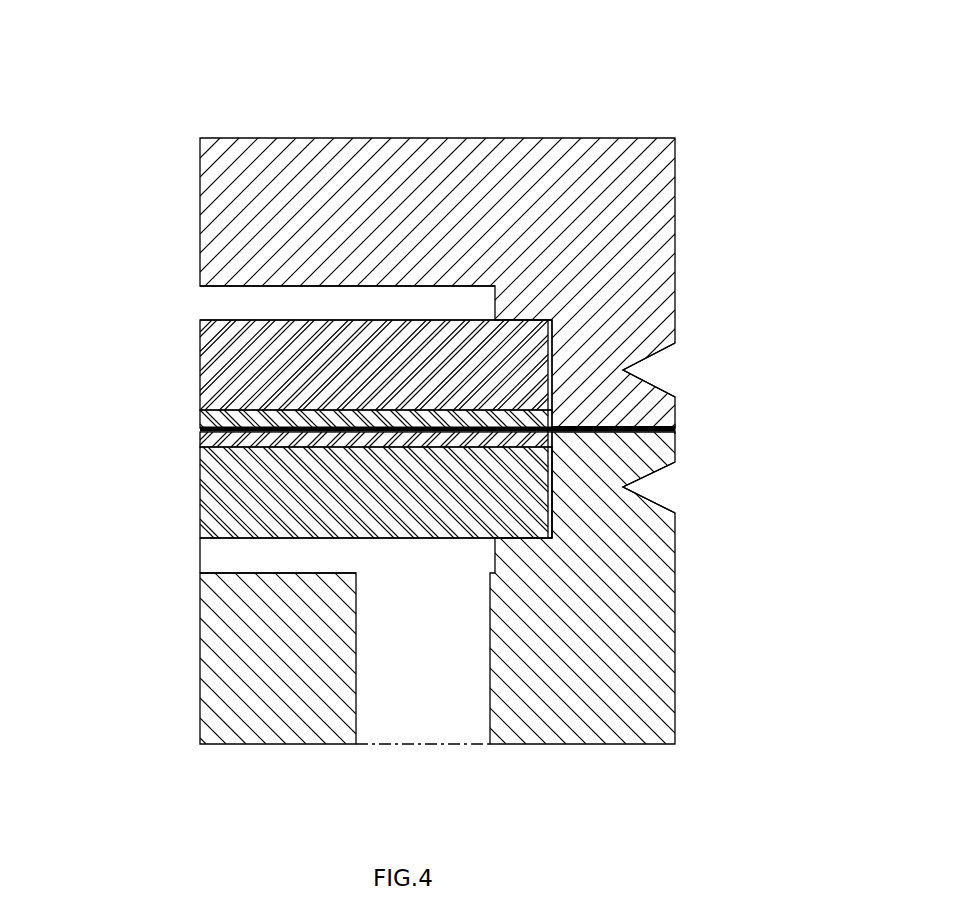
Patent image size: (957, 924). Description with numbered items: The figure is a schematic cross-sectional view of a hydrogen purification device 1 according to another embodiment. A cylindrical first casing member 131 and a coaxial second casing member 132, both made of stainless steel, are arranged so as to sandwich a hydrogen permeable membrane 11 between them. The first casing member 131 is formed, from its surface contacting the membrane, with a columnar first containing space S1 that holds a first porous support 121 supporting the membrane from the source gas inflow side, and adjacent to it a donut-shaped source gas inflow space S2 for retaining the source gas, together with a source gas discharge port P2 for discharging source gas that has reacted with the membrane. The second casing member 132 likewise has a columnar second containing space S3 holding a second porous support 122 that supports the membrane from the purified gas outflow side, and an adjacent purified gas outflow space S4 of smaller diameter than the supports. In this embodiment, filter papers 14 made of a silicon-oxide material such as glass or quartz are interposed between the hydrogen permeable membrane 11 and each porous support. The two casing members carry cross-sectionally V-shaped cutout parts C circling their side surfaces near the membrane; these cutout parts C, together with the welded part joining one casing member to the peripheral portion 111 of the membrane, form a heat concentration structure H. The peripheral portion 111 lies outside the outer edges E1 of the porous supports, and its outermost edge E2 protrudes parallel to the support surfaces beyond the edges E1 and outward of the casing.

The joining structure / workpiece assembly 1 is at (787, 98).
The second casing member 132 is at (676, 220).
The first casing member 131 is at (676, 680).
The second porous support 122 is at (200, 374).
The first porous support 121 is at (200, 508).
The filter paper 14 is at (200, 414).
The hydrogen permeable membrane 11 is at (200, 429).
The peripheral portion of the hydrogen permeable membrane 111 is at (598, 427).
The first containing space S1 is at (262, 488).
The source gas inflow space S2 is at (298, 559).
The second containing space S3 is at (373, 375).
The purified gas outflow space S4 is at (253, 306).
The cutout part C is at (658, 377).
The heat concentration structure H is at (757, 387).
The outer edge of the porous support E1 is at (552, 522).
The outermost edge of the peripheral portion E2 is at (676, 428).
The source gas discharge port P2 is at (424, 595).